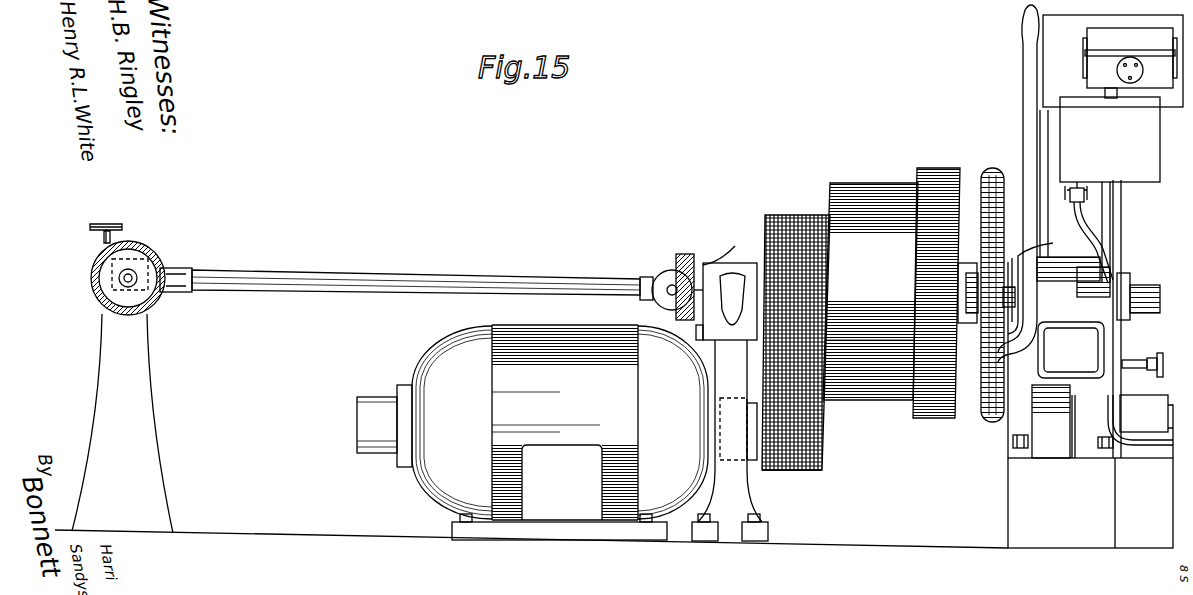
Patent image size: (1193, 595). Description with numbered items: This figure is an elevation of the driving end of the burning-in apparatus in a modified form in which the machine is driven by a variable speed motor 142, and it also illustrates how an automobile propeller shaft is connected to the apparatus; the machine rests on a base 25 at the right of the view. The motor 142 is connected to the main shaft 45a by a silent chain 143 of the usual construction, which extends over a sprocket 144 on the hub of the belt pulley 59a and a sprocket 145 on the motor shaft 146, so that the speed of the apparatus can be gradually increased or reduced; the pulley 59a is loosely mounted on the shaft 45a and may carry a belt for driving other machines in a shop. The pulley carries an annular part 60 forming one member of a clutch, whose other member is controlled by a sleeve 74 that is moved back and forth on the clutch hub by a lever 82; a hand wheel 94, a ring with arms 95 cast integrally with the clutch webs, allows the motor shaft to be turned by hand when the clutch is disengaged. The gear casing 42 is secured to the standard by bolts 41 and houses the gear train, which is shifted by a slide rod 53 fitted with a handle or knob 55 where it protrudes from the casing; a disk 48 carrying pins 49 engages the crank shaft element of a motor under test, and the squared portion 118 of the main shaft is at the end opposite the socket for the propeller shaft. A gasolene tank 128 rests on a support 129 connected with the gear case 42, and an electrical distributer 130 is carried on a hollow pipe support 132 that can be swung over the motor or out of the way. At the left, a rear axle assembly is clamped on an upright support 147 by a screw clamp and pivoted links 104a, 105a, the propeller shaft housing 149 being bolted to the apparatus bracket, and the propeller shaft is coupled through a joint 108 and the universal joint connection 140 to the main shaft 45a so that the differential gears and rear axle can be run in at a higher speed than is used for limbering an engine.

The base 25 is at (1157, 533).
The bolts 41 is at (1013, 442).
The gear casing 42 is at (1067, 421).
The main shaft 45a is at (889, 283).
The disk 48 is at (1153, 398).
The pins 49 is at (1171, 440).
The slide rod 53 is at (1135, 360).
The handle or knob 55 is at (1162, 356).
The belt pulley 59a is at (876, 386).
The annular clutch member 60 is at (928, 168).
The sleeve 74 is at (958, 292).
The lever 82 is at (1023, 62).
The hand wheel 94 is at (995, 168).
The arms 95 is at (967, 262).
The pivoted link 104a is at (97, 289).
The pivoted link 105a is at (168, 291).
The universal joint 108 is at (666, 271).
The squared portion 118 is at (1143, 295).
The gasolene tank 128 is at (1150, 156).
The support 129 is at (1111, 212).
The electrical distributer 130 is at (1097, 64).
The support 132 is at (1117, 246).
The universal joint 140 is at (661, 298).
The variable speed motor 142 is at (466, 344).
The silent chain 143 is at (828, 323).
The sprocket 144 is at (793, 214).
The sprocket 145 is at (808, 472).
The motor shaft 146 is at (753, 450).
The upright supports 147 is at (133, 406).
The propeller shaft housing 149 is at (416, 267).